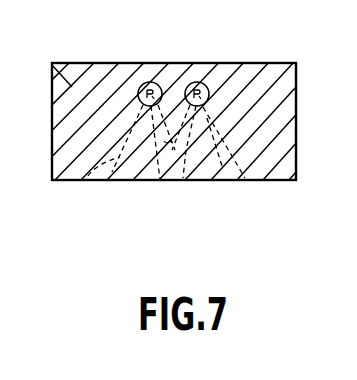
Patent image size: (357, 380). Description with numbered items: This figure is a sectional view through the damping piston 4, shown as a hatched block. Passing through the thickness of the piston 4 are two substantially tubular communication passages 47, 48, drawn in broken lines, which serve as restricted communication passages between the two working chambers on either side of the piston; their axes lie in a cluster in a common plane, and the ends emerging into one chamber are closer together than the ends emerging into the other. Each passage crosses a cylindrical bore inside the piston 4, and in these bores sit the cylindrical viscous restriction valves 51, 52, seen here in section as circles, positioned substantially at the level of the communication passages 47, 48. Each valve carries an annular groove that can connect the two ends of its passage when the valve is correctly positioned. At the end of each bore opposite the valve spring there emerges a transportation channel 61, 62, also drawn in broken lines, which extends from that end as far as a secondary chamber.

The damping piston 4 is at (52, 63).
The viscous restriction valve 52 is at (145, 84).
The viscous restriction valve 51 is at (207, 84).
The communication passage 48 is at (88, 182).
The transportation channel 62 is at (150, 183).
The transportation channel 61 is at (199, 183).
The communication passage 47 is at (247, 182).